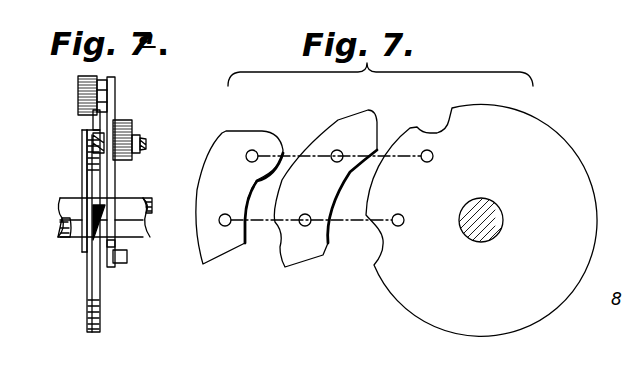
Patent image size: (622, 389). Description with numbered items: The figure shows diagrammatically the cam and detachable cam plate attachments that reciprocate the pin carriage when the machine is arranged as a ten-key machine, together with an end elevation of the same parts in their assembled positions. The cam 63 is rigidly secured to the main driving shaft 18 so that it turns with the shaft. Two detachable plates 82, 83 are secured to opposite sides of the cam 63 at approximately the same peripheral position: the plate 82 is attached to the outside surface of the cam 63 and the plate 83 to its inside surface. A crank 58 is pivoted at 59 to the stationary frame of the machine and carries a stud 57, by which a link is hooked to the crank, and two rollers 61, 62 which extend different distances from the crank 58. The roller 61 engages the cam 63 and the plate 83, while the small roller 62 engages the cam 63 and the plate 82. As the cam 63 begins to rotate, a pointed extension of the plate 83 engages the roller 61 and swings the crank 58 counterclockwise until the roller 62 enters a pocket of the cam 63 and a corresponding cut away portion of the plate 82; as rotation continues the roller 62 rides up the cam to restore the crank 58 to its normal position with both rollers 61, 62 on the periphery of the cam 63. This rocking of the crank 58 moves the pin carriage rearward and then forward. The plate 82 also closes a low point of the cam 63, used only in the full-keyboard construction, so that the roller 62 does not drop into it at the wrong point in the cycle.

In FIG. 7A, the main driving shaft 18 is at (144, 222).
In FIG. 7, the main driving shaft 18 is at (470, 232).
In FIG. 7A, the stud 57 is at (120, 262).
In FIG. 7A, the crank 58 is at (115, 118).
In FIG. 7A, the pivot 59 is at (146, 145).
In FIG. 7A, the roller 61 is at (80, 90).
In FIG. 7A, the roller 62 is at (98, 212).
In FIG. 7A, the cam 63 is at (95, 318).
In FIG. 7, the cam 63 is at (388, 343).
In FIG. 7A, the plate 82 is at (110, 243).
In FIG. 7, the plate 82 is at (340, 122).
In FIG. 7A, the plate 83 is at (82, 173).
In FIG. 7, the plate 83 is at (228, 133).